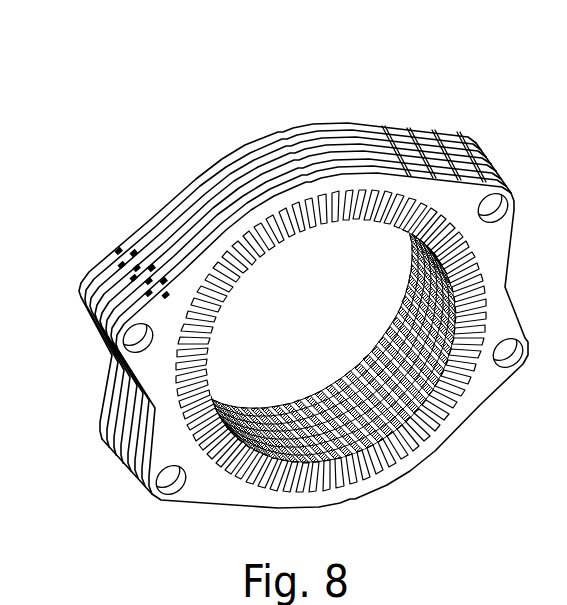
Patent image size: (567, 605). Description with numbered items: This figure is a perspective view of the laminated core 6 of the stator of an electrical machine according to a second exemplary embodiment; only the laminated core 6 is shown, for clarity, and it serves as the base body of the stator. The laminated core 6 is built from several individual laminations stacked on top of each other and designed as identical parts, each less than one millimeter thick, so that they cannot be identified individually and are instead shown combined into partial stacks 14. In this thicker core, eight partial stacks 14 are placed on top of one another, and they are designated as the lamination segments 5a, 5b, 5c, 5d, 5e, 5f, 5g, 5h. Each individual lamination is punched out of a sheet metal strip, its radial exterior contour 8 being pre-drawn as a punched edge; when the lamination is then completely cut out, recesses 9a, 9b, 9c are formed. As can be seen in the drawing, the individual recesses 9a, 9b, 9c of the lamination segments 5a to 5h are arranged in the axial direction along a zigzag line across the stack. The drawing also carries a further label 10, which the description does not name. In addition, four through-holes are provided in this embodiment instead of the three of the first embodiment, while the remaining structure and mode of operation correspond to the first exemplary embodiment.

The lamination segment 5a is at (203, 181).
The lamination segment 5b is at (217, 159).
The lamination segment 5c is at (190, 203).
The lamination segment 5d is at (230, 142).
The lamination segment 5e is at (177, 226).
The lamination segment 5f is at (245, 192).
The lamination segment 5g is at (168, 246).
The lamination segment 5h is at (280, 183).
The laminated core 6 is at (82, 418).
The radial exterior contour 8 is at (300, 143).
The recess 9a is at (125, 244).
The recess 9b is at (111, 258).
The recess 9c is at (110, 242).
The lamination stack 10 is at (336, 137).
The partial stack 14 is at (530, 142).